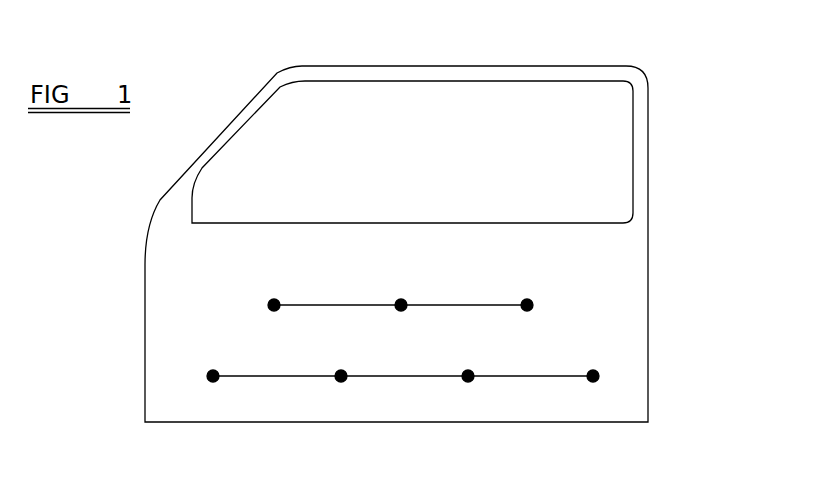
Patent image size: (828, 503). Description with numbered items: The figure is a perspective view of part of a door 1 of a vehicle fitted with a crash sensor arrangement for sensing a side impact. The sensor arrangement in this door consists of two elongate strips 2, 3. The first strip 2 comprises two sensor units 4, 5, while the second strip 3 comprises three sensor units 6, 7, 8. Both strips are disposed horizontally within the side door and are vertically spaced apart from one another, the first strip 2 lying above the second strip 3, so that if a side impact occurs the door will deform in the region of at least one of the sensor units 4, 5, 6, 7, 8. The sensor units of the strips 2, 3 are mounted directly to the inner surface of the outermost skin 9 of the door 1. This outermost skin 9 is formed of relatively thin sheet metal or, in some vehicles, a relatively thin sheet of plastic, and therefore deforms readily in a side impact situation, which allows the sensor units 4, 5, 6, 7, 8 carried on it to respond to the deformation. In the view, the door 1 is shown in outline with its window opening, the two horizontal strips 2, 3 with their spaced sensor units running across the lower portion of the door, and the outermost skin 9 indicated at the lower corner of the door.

The door 1 is at (667, 58).
The first strip 2 is at (527, 305).
The second strip 3 is at (593, 376).
The sensor unit 4 is at (328, 300).
The sensor unit 5 is at (463, 305).
The sensor unit 6 is at (289, 386).
The sensor unit 7 is at (407, 386).
The sensor unit 8 is at (543, 386).
The outermost skin 9 is at (618, 411).